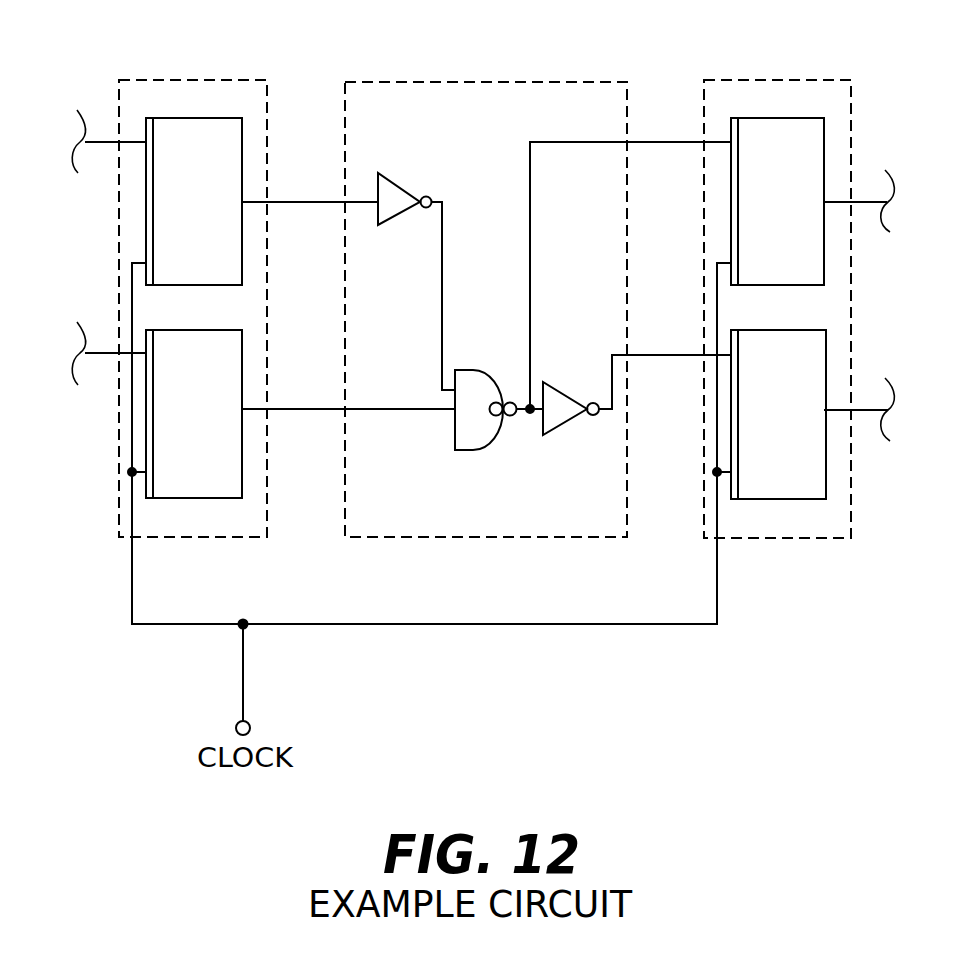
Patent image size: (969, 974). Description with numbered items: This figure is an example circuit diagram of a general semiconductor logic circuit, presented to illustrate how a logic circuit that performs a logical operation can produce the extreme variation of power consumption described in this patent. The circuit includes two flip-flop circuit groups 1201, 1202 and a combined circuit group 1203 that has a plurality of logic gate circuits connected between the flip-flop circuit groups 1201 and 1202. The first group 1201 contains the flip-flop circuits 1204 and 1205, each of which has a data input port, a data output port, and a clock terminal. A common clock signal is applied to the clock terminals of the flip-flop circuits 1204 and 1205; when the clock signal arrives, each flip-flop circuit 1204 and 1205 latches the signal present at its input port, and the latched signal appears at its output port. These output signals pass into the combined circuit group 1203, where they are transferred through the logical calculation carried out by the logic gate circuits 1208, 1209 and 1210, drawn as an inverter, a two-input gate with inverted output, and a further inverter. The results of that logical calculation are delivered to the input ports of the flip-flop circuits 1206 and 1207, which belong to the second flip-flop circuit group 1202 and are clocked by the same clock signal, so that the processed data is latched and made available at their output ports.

The flip-flop circuit group 1201 is at (177, 80).
The flip-flop circuit group 1202 is at (735, 80).
The combined circuit group 1203 is at (447, 82).
The flip-flop circuit 1204 is at (172, 118).
The flip-flop circuit 1205 is at (177, 498).
The flip-flop circuit 1206 is at (757, 118).
The flip-flop circuit 1207 is at (753, 499).
The logic gate circuit 1208 is at (400, 187).
The logic gate circuit 1209 is at (495, 385).
The logic gate circuit 1210 is at (578, 370).